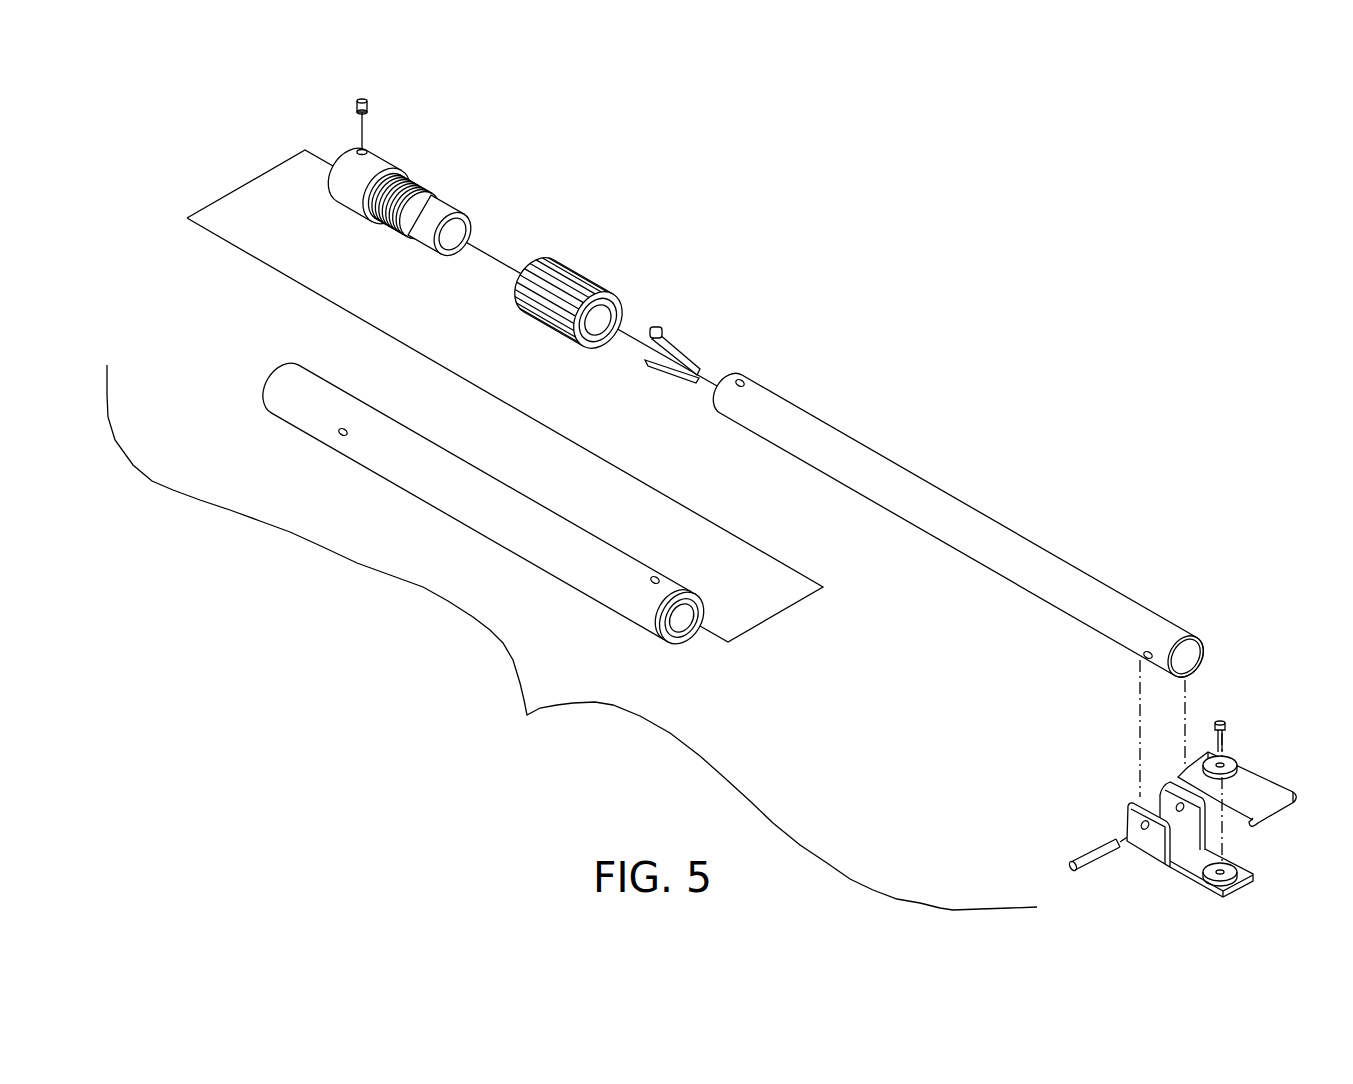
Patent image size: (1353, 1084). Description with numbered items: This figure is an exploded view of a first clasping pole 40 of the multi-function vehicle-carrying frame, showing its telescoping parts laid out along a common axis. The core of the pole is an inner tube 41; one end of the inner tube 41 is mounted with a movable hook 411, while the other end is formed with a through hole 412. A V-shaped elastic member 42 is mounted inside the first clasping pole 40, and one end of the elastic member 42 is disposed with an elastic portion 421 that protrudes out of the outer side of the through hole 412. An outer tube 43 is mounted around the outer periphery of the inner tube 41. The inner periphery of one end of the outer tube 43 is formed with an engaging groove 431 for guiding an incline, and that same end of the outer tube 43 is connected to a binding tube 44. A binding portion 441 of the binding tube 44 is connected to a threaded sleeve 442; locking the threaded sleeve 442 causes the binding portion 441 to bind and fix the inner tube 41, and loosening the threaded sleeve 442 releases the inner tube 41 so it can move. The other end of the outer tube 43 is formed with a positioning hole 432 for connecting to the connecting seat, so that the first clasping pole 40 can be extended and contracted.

The first clasping pole 40 is at (572, 637).
The inner tube 41 is at (950, 507).
The movable hook 411 is at (1258, 787).
The through hole 412 is at (748, 378).
The V-shaped elastic member 42 is at (673, 353).
The elastic portion 421 is at (660, 323).
The outer tube 43 is at (453, 475).
The engaging groove 431 is at (680, 630).
The positioning hole 432 is at (340, 434).
The binding tube 44 is at (387, 158).
The binding portion 441 is at (423, 183).
The threaded sleeve 442 is at (575, 263).